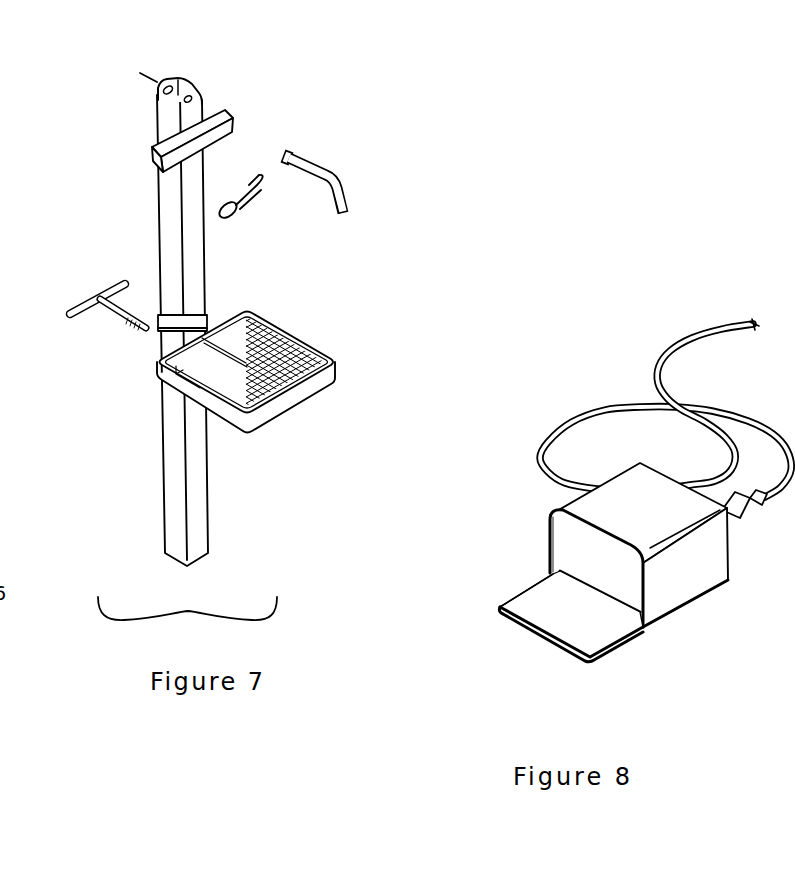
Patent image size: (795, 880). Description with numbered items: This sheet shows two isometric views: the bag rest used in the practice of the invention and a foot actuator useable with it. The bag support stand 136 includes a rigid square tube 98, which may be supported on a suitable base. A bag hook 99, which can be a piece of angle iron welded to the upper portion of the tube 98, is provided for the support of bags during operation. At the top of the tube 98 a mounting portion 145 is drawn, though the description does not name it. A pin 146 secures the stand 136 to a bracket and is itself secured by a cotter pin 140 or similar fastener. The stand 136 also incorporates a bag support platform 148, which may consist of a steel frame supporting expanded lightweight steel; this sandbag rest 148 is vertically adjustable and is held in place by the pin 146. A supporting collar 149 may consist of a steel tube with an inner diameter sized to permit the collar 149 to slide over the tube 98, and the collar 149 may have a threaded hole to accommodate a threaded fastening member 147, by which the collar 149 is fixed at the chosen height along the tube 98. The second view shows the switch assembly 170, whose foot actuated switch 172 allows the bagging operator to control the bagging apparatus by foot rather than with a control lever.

In FIG. 7, the rigid square tube 98 is at (167, 278).
In FIG. 7, the bag hook 99 is at (283, 153).
In FIG. 7, the bag support stand 136 is at (187, 623).
In FIG. 7, the cotter pin 140 is at (247, 204).
In FIG. 7, the bracket 145 is at (197, 93).
In FIG. 7, the pin 146 is at (314, 164).
In FIG. 7, the threaded fastening member 147 is at (83, 302).
In FIG. 7, the bag support platform 148 is at (290, 413).
In FIG. 7, the supporting collar 149 is at (168, 343).
In FIG. 8, the switch assembly 170 is at (642, 477).
In FIG. 8, the foot actuated switch 172 is at (600, 567).